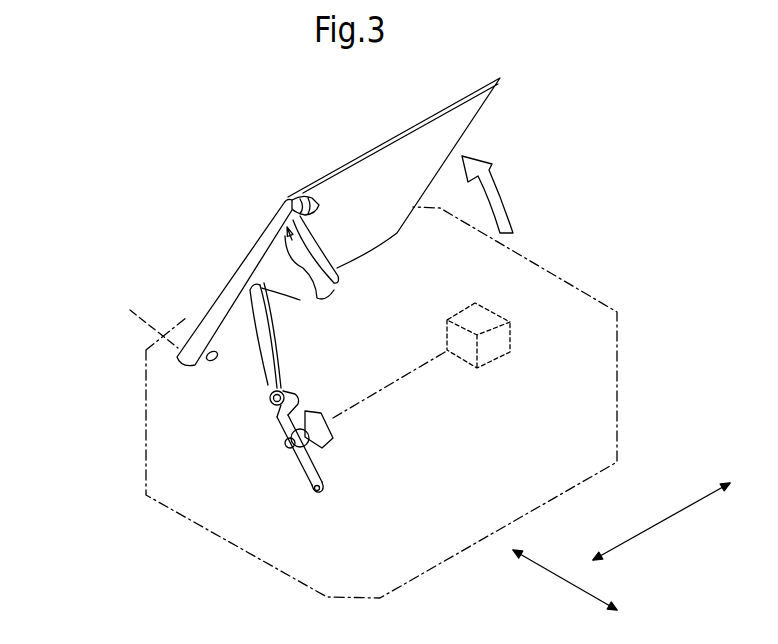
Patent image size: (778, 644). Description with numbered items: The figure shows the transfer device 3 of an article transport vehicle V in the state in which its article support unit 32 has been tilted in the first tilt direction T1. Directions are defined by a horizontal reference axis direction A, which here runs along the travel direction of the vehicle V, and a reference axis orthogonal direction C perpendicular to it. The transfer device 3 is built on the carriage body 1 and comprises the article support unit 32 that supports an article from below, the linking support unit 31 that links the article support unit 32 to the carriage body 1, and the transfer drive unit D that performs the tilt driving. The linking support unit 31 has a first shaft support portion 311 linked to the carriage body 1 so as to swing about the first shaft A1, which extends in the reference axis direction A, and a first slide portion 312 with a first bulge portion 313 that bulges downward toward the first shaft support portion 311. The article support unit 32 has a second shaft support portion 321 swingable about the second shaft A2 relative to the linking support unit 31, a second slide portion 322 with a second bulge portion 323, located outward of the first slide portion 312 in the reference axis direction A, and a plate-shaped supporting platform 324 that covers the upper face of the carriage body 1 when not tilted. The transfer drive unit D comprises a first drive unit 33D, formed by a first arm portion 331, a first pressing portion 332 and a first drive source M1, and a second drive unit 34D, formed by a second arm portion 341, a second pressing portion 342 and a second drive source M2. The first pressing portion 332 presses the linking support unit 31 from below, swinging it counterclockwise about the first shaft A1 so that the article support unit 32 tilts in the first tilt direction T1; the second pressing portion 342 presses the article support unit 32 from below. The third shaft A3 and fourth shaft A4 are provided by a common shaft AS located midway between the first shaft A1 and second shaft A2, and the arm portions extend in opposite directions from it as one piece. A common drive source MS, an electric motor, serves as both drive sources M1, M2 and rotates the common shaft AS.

The carriage body 1 is at (147, 387).
The transfer device 3 is at (210, 245).
The linking support unit 31 is at (249, 359).
The article support unit 32 is at (294, 168).
The first shaft support portion 311 is at (188, 368).
The first slide portion 312 is at (265, 287).
The first bulge portion 313 is at (304, 335).
The second shaft support portion 321 is at (338, 268).
The second slide portion 322 is at (232, 330).
The second bulge portion 323 is at (335, 303).
The supporting platform 324 is at (367, 153).
The first arm portion 331 is at (298, 400).
The first pressing portion 332 is at (283, 416).
The second arm portion 341 is at (320, 467).
The second pressing portion 342 is at (326, 488).
The first shaft A1 is at (137, 316).
The second shaft A2 is at (283, 213).
The third shaft A3 is at (326, 441).
The fourth shaft A4 is at (326, 441).
The common shaft AS is at (288, 446).
The first drive unit 33D is at (361, 529).
The second drive unit 34D is at (361, 529).
The transfer drive unit D is at (290, 486).
The first drive source M1 is at (502, 385).
The second drive source M2 is at (502, 385).
The common drive source MS is at (497, 357).
The first tilt direction T1 is at (494, 194).
The article transport vehicle V is at (567, 200).
The reference axis direction A is at (661, 521).
The reference axis orthogonal direction C is at (565, 580).